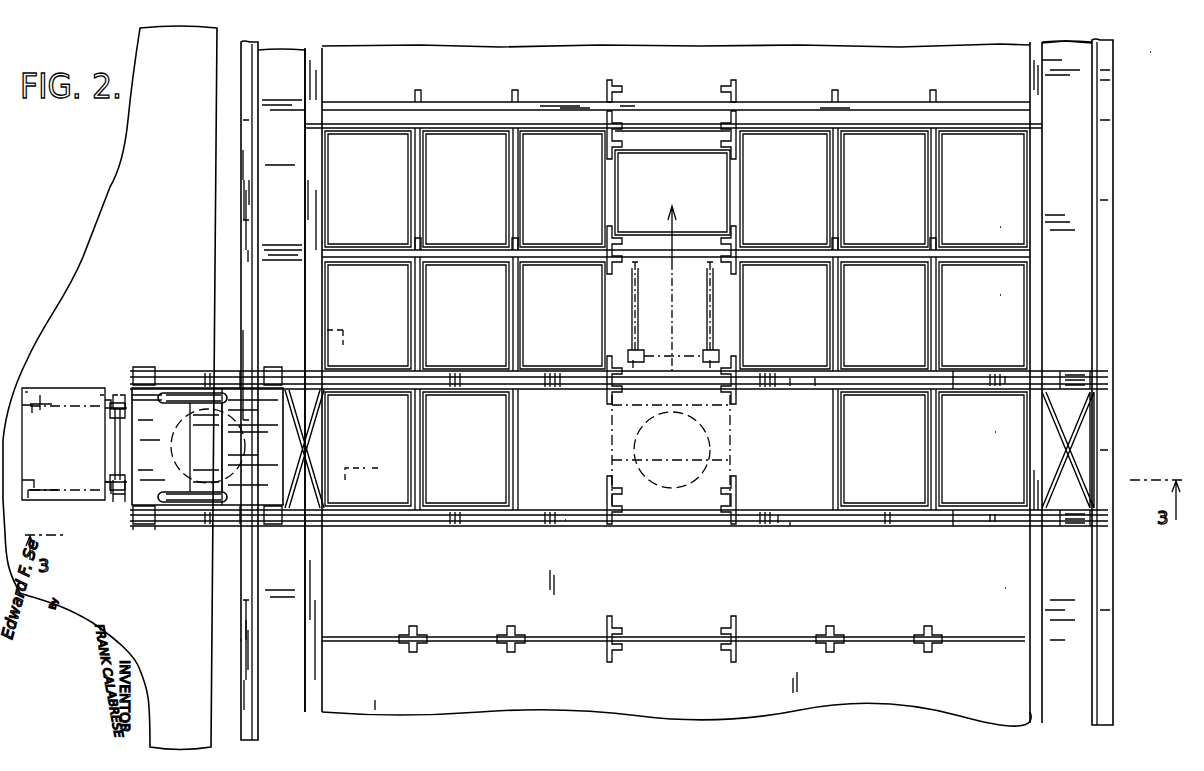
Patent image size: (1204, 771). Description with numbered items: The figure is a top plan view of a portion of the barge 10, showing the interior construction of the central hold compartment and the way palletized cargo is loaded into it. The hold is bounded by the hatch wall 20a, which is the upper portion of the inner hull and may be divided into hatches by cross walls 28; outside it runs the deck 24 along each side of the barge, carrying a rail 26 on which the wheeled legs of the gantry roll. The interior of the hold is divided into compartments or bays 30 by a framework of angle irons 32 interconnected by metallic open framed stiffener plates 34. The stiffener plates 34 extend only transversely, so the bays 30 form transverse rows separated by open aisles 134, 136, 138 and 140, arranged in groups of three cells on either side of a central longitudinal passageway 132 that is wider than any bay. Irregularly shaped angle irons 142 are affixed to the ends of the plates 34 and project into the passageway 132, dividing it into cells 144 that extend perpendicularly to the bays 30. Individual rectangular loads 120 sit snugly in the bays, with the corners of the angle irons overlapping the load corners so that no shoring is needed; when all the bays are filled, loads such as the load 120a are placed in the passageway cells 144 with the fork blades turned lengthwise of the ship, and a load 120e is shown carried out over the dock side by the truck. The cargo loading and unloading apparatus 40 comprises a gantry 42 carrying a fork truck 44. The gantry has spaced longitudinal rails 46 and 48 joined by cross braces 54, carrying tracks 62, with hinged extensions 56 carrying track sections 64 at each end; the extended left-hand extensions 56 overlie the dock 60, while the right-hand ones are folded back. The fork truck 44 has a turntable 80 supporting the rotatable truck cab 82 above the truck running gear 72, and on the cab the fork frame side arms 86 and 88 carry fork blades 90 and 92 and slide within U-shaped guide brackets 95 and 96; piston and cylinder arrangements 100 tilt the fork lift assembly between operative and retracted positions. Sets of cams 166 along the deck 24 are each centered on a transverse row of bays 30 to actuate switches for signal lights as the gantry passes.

The barge 10 is at (1152, 50).
The deck 24 is at (287, 60).
The rail 26 is at (252, 52).
The cross walls 28 is at (982, 114).
The hatch wall 20a is at (1032, 168).
The bays 30 is at (562, 459).
The angle irons 32 is at (522, 628).
The stiffeners 34 is at (450, 643).
The cargo loading and unloading apparatus 40 is at (345, 437).
The gantry 42 is at (565, 522).
The fork truck 44 is at (183, 392).
The longitudinal rail 46 is at (790, 525).
The longitudinal rail 48 is at (790, 378).
The cross braces 54 is at (1072, 462).
The extensions 56 is at (980, 372).
The dock 60 is at (179, 640).
The tracks 62 is at (815, 378).
The track sections 64 is at (221, 371).
The lower support 72 is at (137, 528).
The turntable 80 is at (708, 441).
The truck cab 82 is at (253, 392).
The side arm 86 is at (118, 502).
The side arm 88 is at (132, 400).
The fork blade 90 is at (638, 292).
The fork blade 92 is at (710, 292).
The guide bracket 95 is at (125, 415).
The guide bracket 96 is at (120, 472).
The piston and cylinder arrangements 100 is at (205, 413).
The loads 120 is at (886, 329).
The load 120a is at (700, 196).
The storage panel 120e is at (25, 395).
The central longitudinal passageway 132 is at (669, 138).
The transverse aisle 134 is at (1000, 228).
The transverse aisle 136 is at (1000, 296).
The transverse aisle 138 is at (995, 432).
The transverse aisle 140 is at (1005, 588).
The irregularly shaped angle irons 142 is at (730, 242).
The cells 144 is at (683, 598).
The cam sets 166 is at (240, 208).